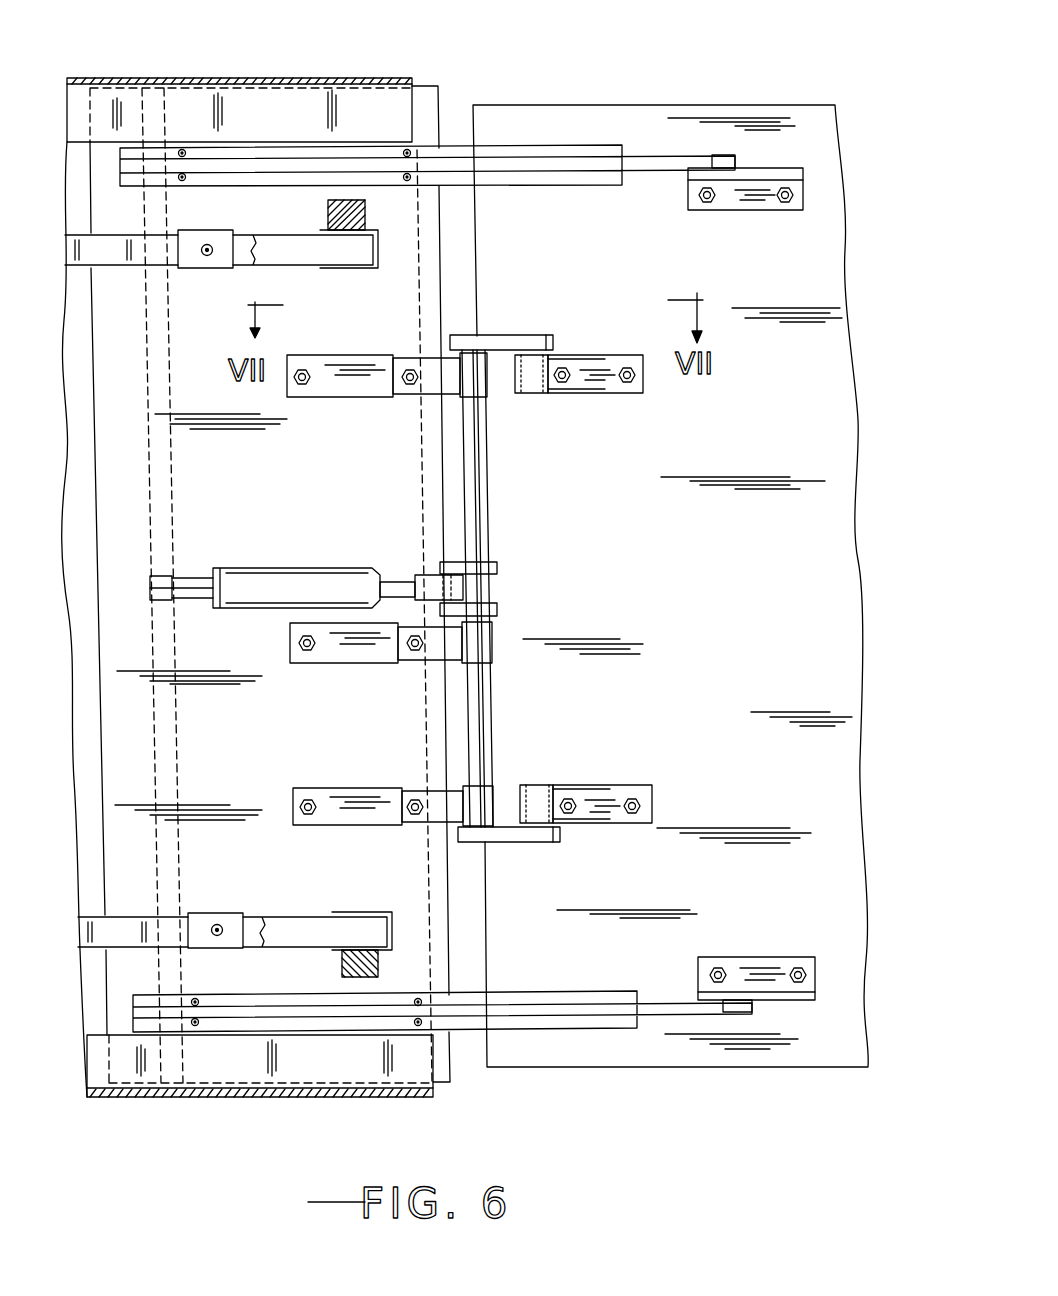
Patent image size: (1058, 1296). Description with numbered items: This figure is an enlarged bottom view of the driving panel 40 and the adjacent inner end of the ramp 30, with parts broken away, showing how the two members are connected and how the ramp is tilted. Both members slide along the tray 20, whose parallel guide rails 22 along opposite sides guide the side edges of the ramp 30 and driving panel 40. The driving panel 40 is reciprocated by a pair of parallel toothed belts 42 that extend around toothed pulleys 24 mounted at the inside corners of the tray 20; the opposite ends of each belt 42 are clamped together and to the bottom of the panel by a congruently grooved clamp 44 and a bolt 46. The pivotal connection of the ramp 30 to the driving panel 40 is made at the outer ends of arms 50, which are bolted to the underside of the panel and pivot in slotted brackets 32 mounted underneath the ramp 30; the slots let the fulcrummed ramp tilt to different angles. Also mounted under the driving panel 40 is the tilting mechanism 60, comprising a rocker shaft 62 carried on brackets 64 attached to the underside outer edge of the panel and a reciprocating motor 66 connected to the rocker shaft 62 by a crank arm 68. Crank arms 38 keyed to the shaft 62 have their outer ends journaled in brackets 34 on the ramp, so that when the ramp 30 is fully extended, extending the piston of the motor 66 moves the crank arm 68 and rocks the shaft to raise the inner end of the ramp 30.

The tray 20 is at (256, 583).
The guide rails 22 is at (368, 107).
The toothed pulleys 24 is at (357, 268).
The ramp 30 is at (735, 631).
The slotted brackets 32 is at (728, 200).
The brackets 34 is at (618, 390).
The crank arms 38 is at (502, 338).
The driving panel 40 is at (262, 496).
The toothed belts 42 is at (288, 255).
The congruently grooved clamp 44 is at (217, 238).
The bolt 46 is at (207, 257).
The arms 50 is at (577, 170).
The tilting mechanism 60 is at (380, 588).
The rocker shaft 62 is at (486, 473).
The brackets 64 is at (340, 383).
The reciprocating motor 66 is at (312, 583).
The crank arm 68 is at (497, 565).